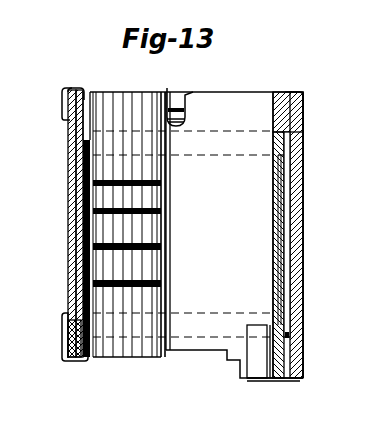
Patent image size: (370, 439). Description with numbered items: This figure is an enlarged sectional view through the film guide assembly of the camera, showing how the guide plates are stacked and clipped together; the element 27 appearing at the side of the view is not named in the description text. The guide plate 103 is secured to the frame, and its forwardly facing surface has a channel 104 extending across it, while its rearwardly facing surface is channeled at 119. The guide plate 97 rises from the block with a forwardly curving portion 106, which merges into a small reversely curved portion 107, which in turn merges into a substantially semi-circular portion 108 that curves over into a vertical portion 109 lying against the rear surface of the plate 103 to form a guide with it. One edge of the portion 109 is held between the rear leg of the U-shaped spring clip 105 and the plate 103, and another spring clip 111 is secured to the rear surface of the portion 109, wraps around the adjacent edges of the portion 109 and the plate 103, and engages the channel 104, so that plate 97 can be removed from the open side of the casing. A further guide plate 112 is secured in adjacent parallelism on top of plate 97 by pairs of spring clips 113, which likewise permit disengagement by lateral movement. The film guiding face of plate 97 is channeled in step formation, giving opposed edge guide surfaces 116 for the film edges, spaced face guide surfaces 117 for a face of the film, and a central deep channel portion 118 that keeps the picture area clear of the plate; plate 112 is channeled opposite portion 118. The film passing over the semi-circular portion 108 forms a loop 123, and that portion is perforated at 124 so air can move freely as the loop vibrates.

The housing 27 is at (304, 192).
The guide plate 97 is at (280, 92).
The guide plate 103 is at (74, 206).
The channel 104 is at (78, 243).
The spring clip 105 is at (82, 360).
The forwardly curving portion 106 is at (235, 328).
The reversely curved portion 107 is at (168, 330).
The semi-circular portion 108 is at (128, 350).
The vertical portion 109 is at (82, 89).
The spring clip 111 is at (70, 88).
The guide plate 112 is at (303, 122).
The spring clip 113 is at (186, 92).
The edge guide surface 116 is at (290, 134).
The face guide surface 117 is at (282, 155).
The central deep channel portion 118 is at (284, 256).
The channel 119 is at (80, 266).
The loop 123 is at (120, 286).
The perforation 124 is at (115, 183).